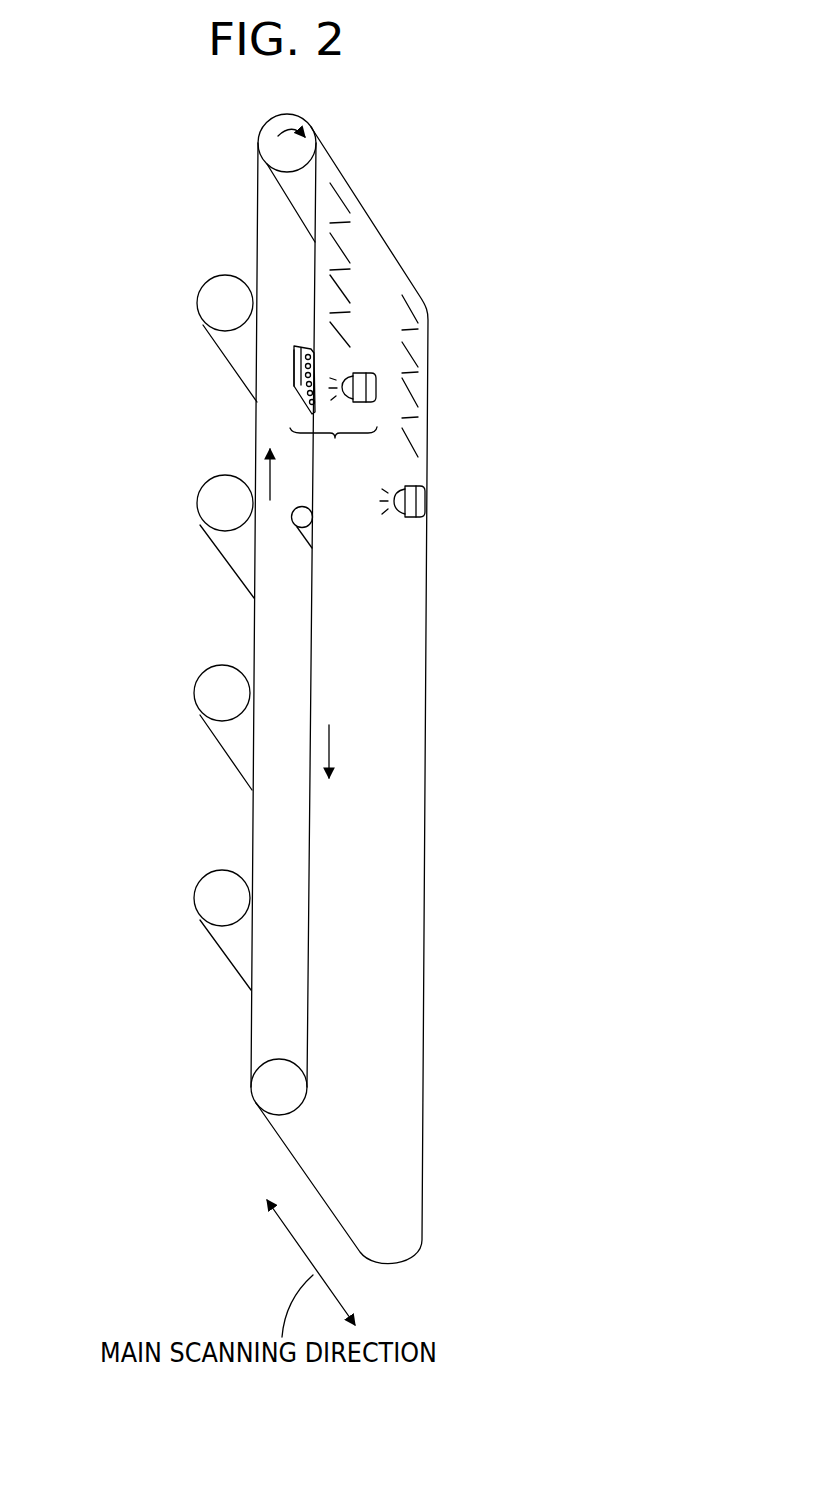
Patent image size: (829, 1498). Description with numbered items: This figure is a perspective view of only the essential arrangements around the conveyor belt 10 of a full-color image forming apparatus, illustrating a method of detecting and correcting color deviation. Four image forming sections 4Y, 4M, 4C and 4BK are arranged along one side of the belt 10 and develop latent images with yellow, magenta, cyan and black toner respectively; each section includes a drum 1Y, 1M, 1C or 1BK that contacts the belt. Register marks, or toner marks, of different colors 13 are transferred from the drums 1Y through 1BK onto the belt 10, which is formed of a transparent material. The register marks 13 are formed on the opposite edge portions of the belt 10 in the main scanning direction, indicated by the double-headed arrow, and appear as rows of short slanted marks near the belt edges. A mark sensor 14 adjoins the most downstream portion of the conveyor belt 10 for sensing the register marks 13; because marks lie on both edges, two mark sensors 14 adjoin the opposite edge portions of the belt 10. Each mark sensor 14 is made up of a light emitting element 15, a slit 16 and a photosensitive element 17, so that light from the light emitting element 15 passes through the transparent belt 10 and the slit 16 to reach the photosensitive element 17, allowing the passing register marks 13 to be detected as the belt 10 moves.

The conveyor belt 10 is at (418, 688).
The register marks 13 is at (353, 189).
The mark sensor 14 is at (333, 451).
The light emitting element 15 is at (358, 368).
The slit 16 is at (309, 346).
The photosensitive element 17 is at (294, 360).
The drum 1BK is at (208, 316).
The image forming section 4BK is at (182, 293).
The drum 1C is at (205, 516).
The image forming section 4C is at (170, 502).
The drum 1M is at (203, 710).
The image forming section 4M is at (170, 680).
The drum 1Y is at (202, 915).
The image forming section 4Y is at (150, 888).